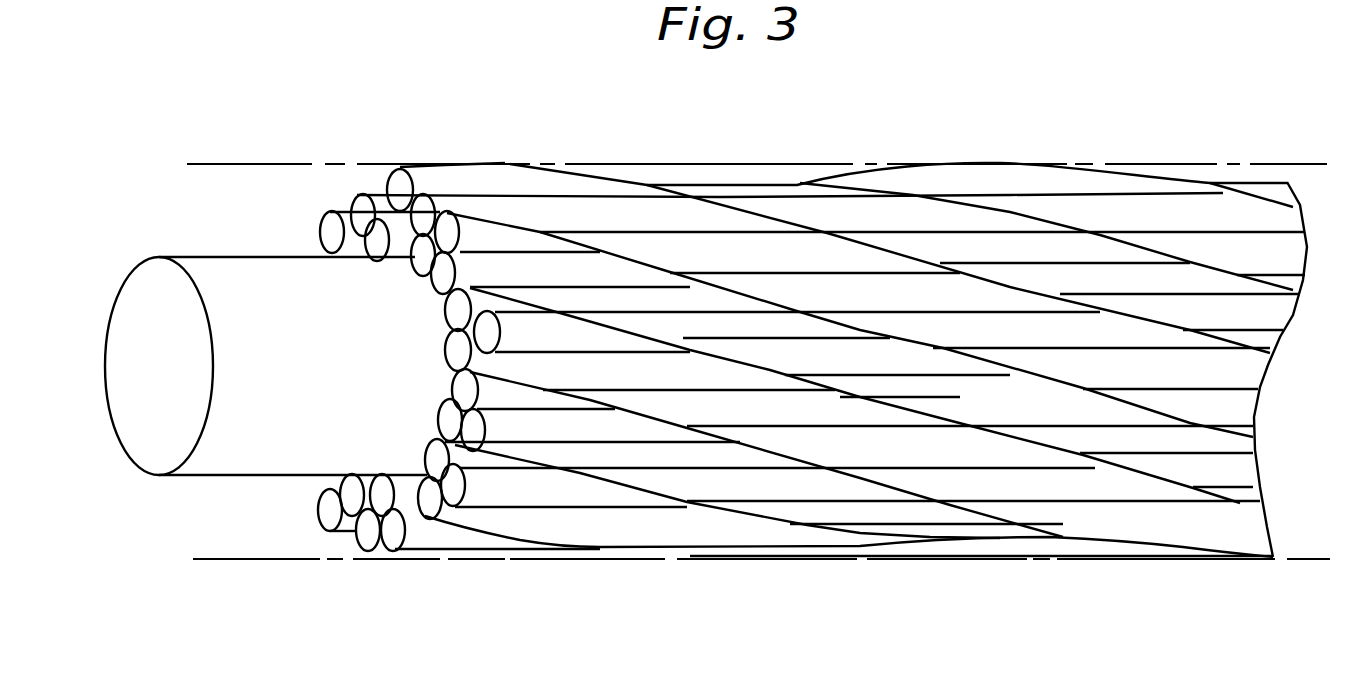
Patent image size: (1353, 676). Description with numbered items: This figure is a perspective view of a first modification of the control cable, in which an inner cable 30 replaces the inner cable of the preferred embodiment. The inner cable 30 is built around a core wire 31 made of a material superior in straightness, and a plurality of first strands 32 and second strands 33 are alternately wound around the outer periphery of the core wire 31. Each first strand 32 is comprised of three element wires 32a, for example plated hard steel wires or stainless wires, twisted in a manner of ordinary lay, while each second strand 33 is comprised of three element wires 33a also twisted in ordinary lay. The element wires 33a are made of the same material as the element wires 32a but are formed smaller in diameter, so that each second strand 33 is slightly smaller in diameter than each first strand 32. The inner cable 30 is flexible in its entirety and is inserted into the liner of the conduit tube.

The inner cable 30 is at (809, 147).
The core wire 31 is at (235, 257).
The first strands 32 is at (511, 156).
The element wires 32a is at (450, 163).
The second strands 33 is at (605, 485).
The element wires 33a is at (530, 445).